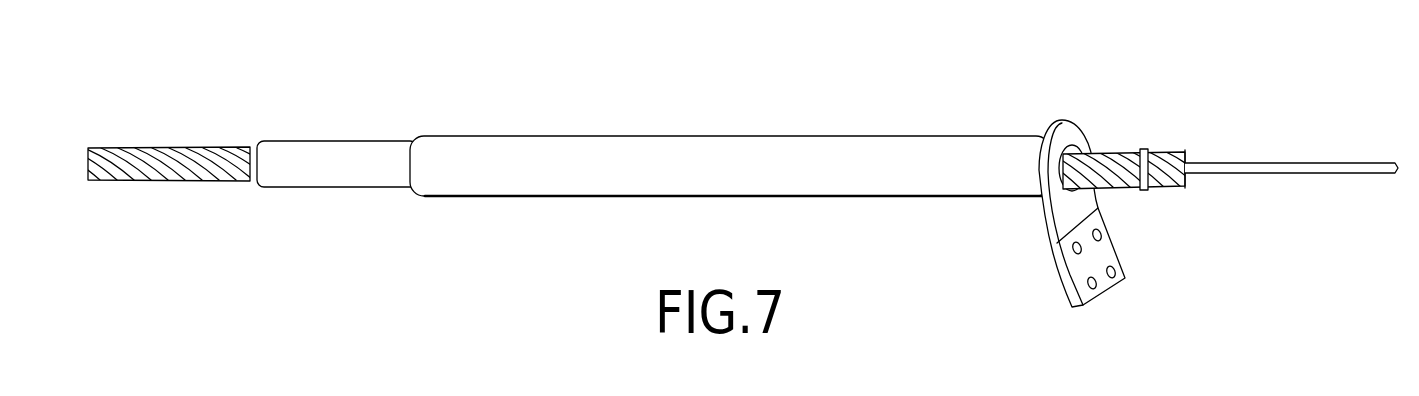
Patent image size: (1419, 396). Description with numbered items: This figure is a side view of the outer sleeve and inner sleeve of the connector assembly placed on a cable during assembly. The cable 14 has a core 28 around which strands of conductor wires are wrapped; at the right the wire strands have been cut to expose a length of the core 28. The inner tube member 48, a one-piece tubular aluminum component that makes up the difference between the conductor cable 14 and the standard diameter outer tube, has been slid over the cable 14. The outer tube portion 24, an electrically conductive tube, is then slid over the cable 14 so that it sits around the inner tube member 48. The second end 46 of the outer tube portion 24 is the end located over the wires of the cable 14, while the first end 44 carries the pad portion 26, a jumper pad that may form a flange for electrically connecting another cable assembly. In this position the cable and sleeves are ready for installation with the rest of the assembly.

The cable 14 is at (148, 150).
The inner tube member 48 is at (280, 142).
The second end 46 is at (472, 135).
The outer tube portion 24 is at (716, 137).
The first end 44 is at (975, 148).
The pad portion 26 is at (1058, 228).
The core 28 is at (1310, 168).